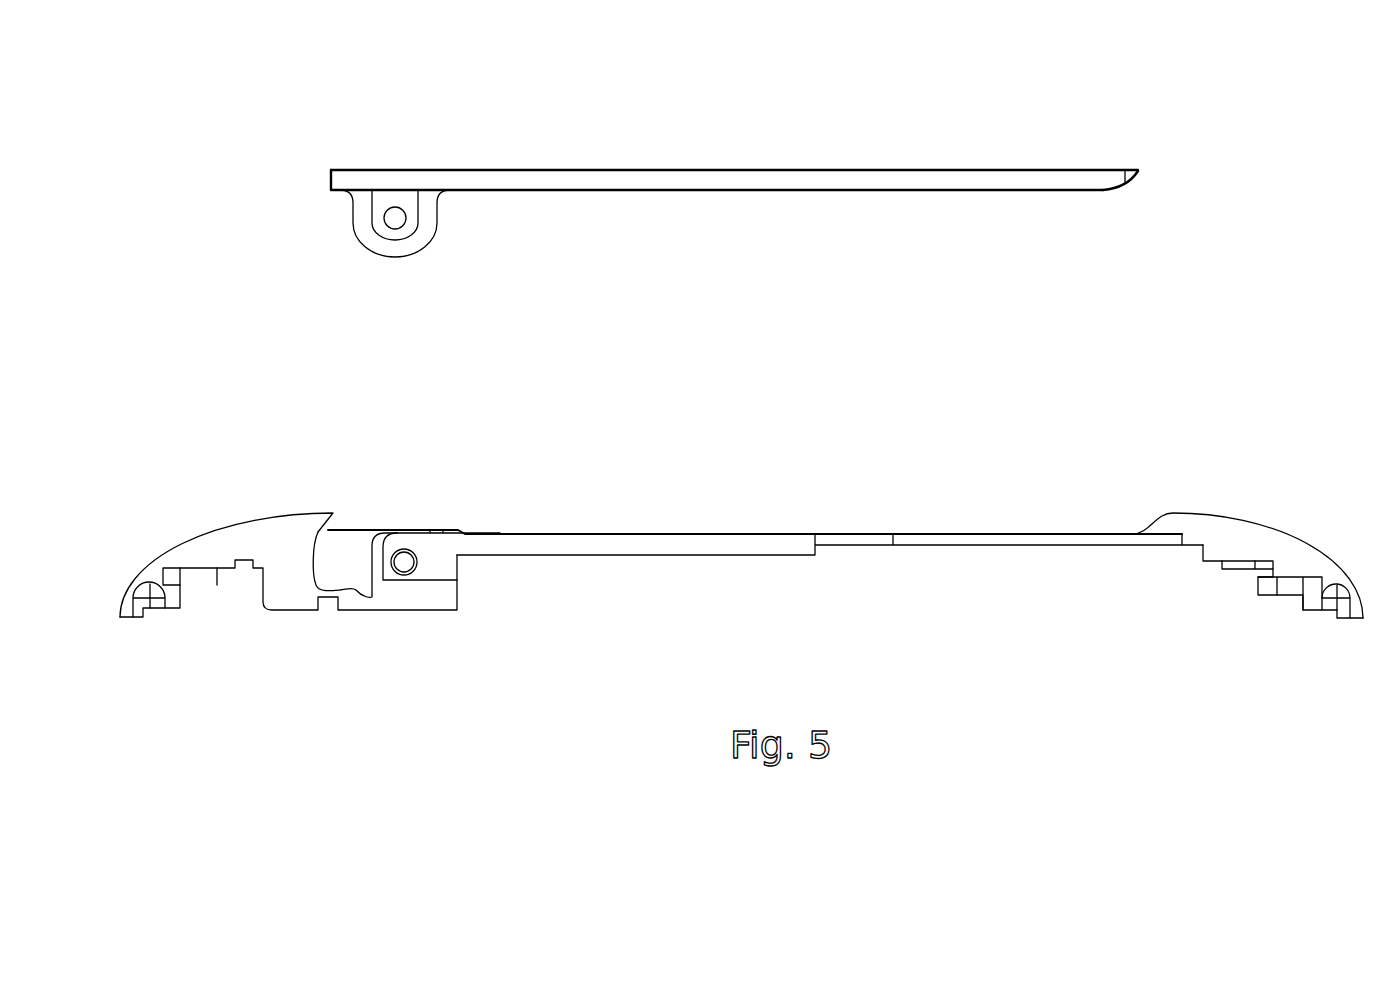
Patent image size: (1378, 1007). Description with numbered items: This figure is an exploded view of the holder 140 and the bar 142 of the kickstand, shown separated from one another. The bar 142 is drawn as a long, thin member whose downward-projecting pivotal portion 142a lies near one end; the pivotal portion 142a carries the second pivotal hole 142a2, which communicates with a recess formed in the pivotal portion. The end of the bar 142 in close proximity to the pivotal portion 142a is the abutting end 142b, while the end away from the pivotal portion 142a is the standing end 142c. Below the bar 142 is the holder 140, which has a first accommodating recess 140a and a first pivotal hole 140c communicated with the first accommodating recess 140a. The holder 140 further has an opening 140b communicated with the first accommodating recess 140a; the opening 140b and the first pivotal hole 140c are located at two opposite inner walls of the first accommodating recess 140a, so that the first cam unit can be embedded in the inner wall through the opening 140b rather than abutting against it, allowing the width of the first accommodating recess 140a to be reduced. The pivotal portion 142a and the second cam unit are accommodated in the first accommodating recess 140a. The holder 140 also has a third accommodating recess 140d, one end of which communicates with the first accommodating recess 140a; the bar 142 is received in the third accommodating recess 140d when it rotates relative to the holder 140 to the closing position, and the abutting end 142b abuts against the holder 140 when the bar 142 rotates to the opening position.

The holder 140 is at (1262, 515).
The first accommodating recess 140a is at (353, 542).
The opening 140b is at (388, 533).
The first pivotal hole 140c is at (412, 574).
The third accommodating recess 140d is at (963, 533).
The bar 142 is at (726, 170).
The pivotal portion 142a is at (370, 250).
The second pivotal hole 142a2 is at (405, 227).
The abutting end 142b is at (327, 177).
The standing end 142c is at (1140, 173).